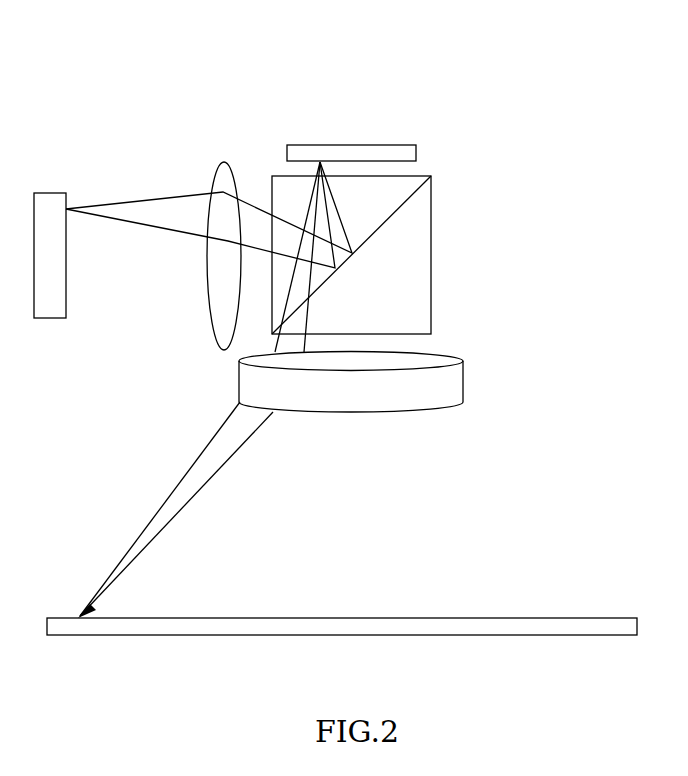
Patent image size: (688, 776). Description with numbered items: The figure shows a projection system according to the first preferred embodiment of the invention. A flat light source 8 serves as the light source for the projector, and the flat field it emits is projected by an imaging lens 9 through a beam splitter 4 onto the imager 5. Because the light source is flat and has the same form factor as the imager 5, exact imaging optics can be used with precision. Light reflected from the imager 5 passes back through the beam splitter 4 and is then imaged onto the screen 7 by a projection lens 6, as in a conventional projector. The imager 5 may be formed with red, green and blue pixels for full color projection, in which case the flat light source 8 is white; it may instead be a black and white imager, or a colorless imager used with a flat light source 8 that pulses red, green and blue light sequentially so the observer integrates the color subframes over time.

The beam splitter 4 is at (415, 256).
The imager 5 is at (417, 161).
The projection lens 6 is at (463, 367).
The screen 7 is at (573, 618).
The flat light source 8 is at (50, 192).
The imaging lens 9 is at (224, 162).